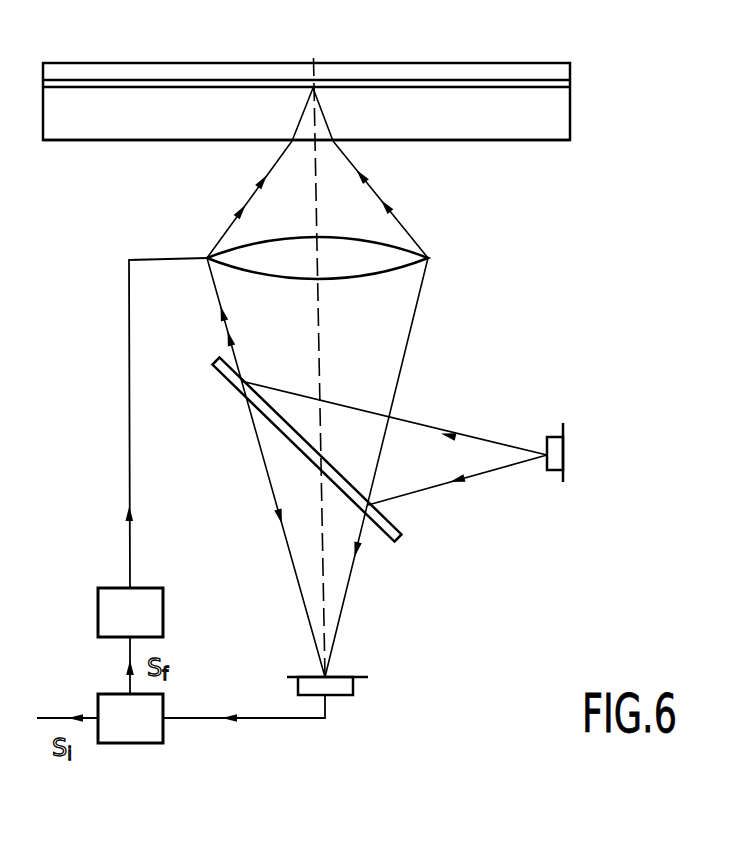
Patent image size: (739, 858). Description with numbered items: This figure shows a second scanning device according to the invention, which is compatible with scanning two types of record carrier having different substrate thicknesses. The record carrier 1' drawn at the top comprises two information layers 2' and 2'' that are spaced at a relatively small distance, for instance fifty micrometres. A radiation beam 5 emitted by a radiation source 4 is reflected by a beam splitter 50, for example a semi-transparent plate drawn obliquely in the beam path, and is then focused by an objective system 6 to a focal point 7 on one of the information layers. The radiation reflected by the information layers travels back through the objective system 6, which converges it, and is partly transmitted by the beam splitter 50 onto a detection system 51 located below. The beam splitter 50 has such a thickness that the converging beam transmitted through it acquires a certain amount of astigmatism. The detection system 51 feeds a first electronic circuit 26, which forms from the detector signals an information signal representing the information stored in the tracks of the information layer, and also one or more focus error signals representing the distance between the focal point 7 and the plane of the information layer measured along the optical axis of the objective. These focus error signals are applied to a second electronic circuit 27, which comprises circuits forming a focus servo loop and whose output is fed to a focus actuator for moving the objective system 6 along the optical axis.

The record carrier 1' is at (334, 83).
The information layer 2'' is at (341, 75).
The information layer 2' is at (340, 118).
The focal point 7 is at (318, 86).
The objective system 6 is at (232, 262).
The beam splitter 50 is at (222, 373).
The radiation beam 5 is at (481, 438).
The radiation source 4 is at (555, 472).
The detection system 51 is at (296, 677).
The second electronic circuit 27 is at (98, 605).
The first electronic circuit 26 is at (132, 744).